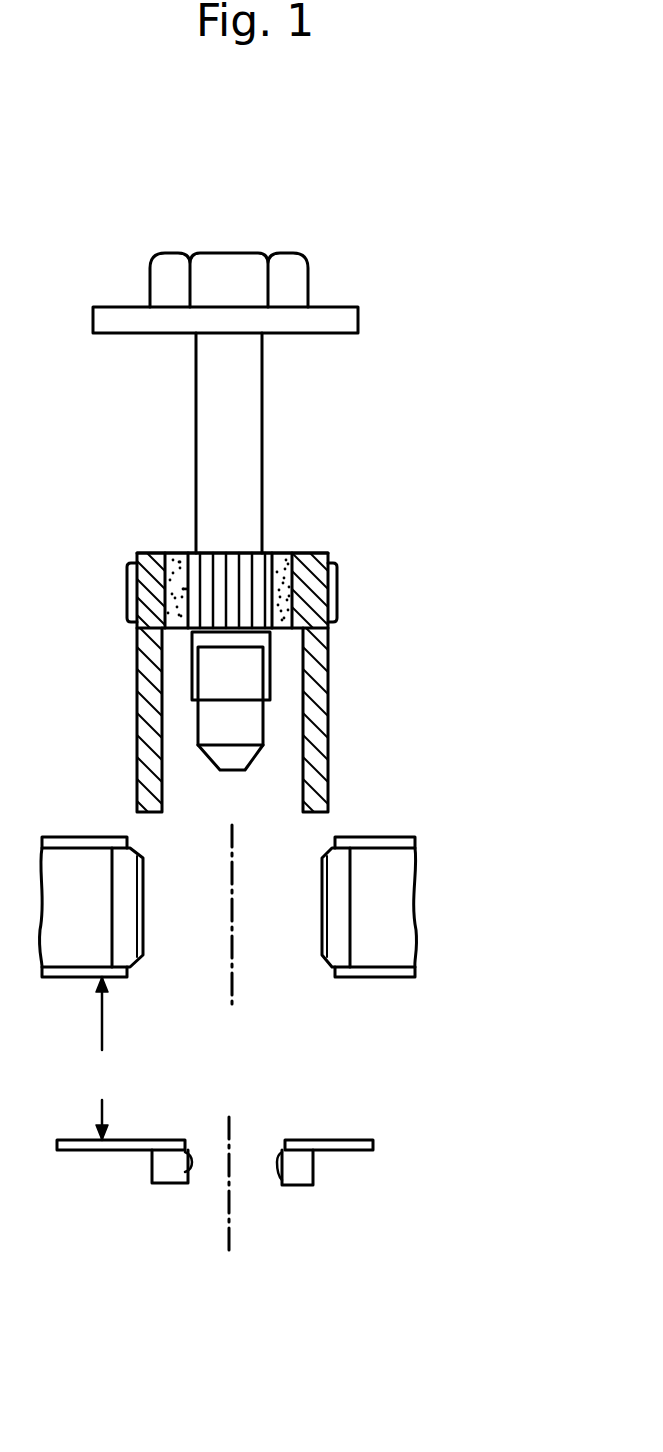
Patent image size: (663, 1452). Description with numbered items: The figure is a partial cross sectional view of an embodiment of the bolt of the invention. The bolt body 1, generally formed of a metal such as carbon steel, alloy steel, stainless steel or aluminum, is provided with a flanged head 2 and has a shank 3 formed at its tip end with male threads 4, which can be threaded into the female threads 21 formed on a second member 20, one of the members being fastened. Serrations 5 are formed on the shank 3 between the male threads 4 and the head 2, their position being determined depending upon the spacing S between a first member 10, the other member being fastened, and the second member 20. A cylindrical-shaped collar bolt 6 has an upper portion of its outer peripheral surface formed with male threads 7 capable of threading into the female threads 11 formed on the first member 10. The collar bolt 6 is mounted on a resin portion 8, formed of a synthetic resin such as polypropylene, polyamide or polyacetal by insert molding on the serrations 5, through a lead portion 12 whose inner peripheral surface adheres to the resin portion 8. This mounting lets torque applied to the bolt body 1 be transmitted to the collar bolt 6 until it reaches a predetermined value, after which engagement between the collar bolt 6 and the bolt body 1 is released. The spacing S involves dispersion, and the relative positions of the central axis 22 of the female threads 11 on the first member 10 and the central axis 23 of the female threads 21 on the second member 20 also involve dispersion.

The bolt body 1 is at (328, 298).
The flanged head 2 is at (228, 280).
The shank 3 is at (243, 443).
The male threads 4 is at (253, 672).
The serrations 5 is at (262, 552).
The collar bolt 6 is at (317, 742).
The male threads 7 is at (337, 593).
The resin portion 8 is at (183, 553).
The first member 10 is at (405, 890).
The female threads 11 is at (143, 922).
The lead portion 12 is at (300, 556).
The second member 20 is at (345, 1147).
The female threads 21 is at (192, 1168).
The central axis 22 is at (232, 1003).
The central axis 23 is at (229, 1240).
The spacing S is at (102, 1058).